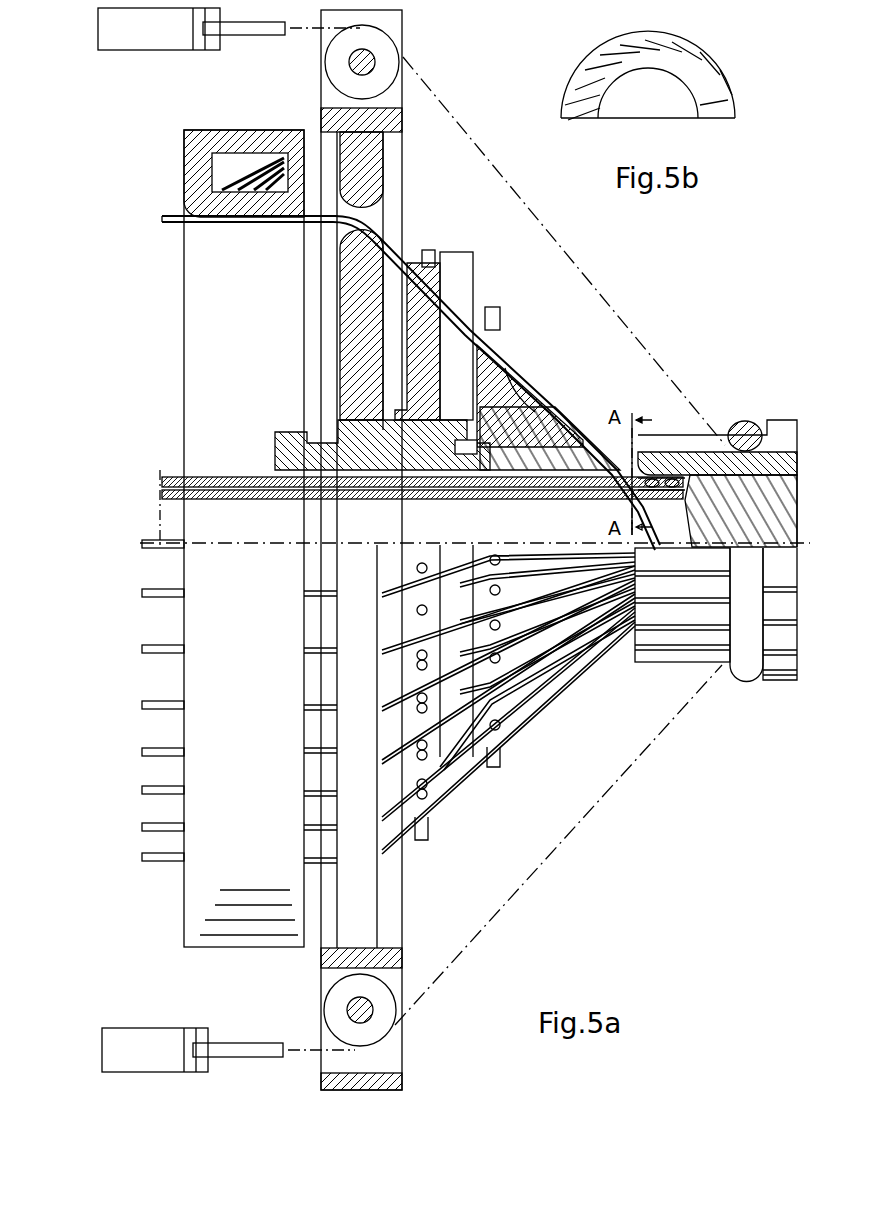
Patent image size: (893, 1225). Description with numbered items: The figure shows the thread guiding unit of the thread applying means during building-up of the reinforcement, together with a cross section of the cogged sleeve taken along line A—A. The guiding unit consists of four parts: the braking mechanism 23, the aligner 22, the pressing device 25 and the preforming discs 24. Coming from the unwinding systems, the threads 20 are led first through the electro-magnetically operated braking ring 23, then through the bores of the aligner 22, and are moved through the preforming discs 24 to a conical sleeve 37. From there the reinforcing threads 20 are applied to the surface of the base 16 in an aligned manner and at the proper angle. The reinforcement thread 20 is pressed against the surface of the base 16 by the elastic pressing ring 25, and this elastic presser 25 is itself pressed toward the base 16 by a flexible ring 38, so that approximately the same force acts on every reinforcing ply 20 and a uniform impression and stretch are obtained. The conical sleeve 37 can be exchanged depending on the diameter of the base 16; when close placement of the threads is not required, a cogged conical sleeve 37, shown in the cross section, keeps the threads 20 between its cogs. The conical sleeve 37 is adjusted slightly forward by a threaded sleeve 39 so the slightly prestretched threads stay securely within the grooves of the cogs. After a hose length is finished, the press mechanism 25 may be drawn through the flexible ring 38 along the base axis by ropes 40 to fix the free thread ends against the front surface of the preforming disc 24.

In FIG. 5A, the base 16 is at (158, 482).
In FIG. 5A, the threads 20 is at (575, 425).
In FIG. 5A, the aligner 22 is at (340, 140).
In FIG. 5A, the braking mechanism 23 is at (192, 165).
In FIG. 5A, the preforming discs 24 is at (468, 300).
In FIG. 5A, the pressing device 25 is at (780, 432).
In FIG. 5A, the conical sleeve 37 is at (540, 440).
In FIG. 5B, the conical sleeve 37 is at (676, 50).
In FIG. 5A, the flexible ring 38 is at (738, 420).
In FIG. 5A, the threaded sleeve 39 is at (285, 452).
In FIG. 5A, the ropes 40 is at (650, 345).